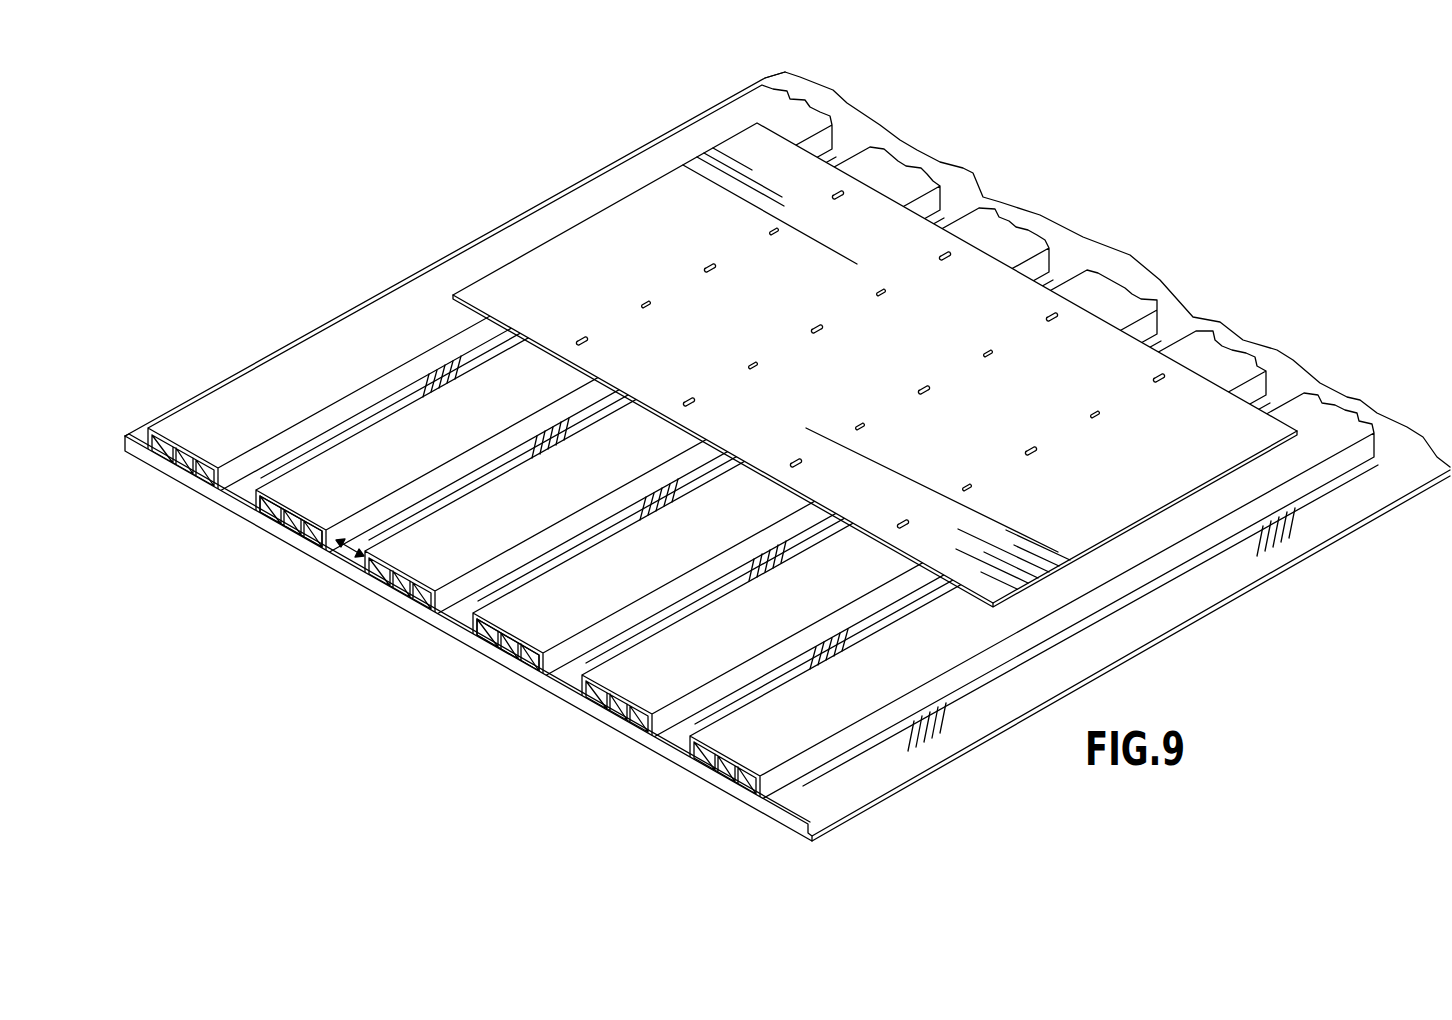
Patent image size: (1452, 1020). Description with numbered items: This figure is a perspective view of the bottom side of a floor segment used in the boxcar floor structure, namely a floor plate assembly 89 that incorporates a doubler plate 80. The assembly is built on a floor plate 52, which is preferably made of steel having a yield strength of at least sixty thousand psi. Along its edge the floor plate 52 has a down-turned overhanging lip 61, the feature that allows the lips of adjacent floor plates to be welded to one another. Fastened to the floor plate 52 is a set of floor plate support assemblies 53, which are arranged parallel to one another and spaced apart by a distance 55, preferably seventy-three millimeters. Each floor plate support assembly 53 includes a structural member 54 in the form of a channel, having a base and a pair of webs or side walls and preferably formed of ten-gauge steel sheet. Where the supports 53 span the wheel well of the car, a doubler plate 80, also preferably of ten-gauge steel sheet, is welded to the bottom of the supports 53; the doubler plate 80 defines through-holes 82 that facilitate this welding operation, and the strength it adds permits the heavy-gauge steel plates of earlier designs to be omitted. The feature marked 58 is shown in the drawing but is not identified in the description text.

The floor plate 52 is at (1343, 507).
The floor plate support assembly 53 is at (285, 503).
The structural member 54 is at (225, 393).
The distance 55 is at (345, 550).
The gap floor hatching 58 is at (617, 715).
The down-turned overhanging lip 61 is at (783, 820).
The doubler plate 80 is at (530, 262).
The through-holes 82 is at (1098, 418).
The floor plate assembly 89 is at (1188, 253).